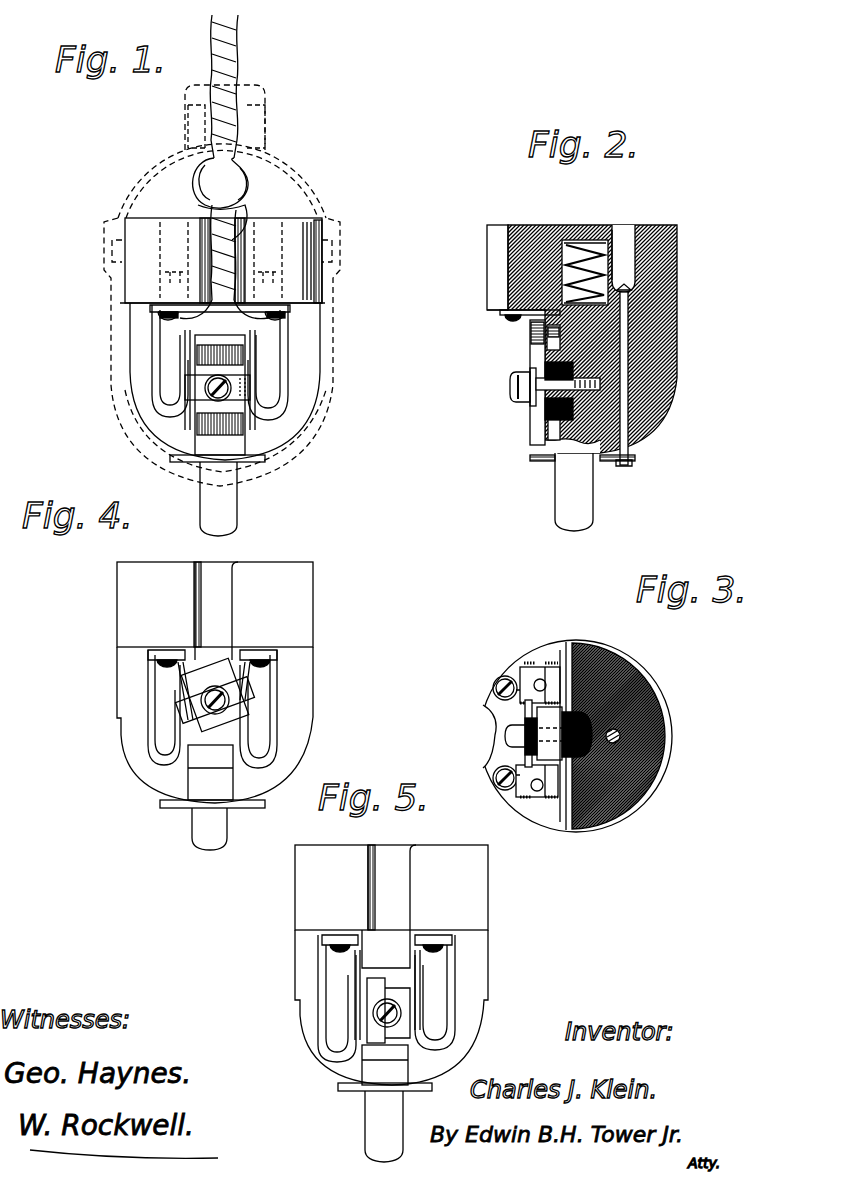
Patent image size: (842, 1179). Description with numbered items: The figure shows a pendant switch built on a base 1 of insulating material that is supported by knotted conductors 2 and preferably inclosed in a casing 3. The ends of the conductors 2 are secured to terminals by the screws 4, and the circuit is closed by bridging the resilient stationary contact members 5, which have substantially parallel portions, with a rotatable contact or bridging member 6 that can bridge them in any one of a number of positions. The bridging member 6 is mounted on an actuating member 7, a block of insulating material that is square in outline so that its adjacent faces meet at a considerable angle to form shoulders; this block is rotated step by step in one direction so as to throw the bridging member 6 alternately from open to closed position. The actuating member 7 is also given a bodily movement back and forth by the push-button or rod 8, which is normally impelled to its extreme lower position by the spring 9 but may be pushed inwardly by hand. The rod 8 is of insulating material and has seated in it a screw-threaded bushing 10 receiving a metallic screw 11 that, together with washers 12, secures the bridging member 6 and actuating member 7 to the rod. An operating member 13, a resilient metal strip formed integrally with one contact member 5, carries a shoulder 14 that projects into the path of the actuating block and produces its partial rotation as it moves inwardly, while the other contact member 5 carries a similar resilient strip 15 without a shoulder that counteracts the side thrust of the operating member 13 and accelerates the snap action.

In FIG. 1, the base 1 is at (322, 220).
In FIG. 2, the base 1 is at (677, 285).
In FIG. 4, the base 1 is at (305, 590).
In FIG. 3, the base 1 is at (590, 830).
In FIG. 5, the base 1 is at (295, 908).
In FIG. 1, the knotted conductors 2 is at (235, 135).
In FIG. 1, the casing 3 is at (320, 416).
In FIG. 2, the casing 3 is at (753, 372).
In FIG. 1, the screws 4 is at (168, 318).
In FIG. 2, the screws 4 is at (508, 318).
In FIG. 4, the screws 4 is at (165, 657).
In FIG. 3, the screws 4 is at (492, 688).
In FIG. 5, the screws 4 is at (335, 948).
In FIG. 1, the resilient contact members 5 is at (178, 368).
In FIG. 2, the resilient contact members 5 is at (548, 415).
In FIG. 4, the resilient contact members 5 is at (160, 722).
In FIG. 3, the resilient contact members 5 is at (535, 668).
In FIG. 5, the resilient contact members 5 is at (350, 1000).
In FIG. 1, the rotatable contact member 6 is at (202, 408).
In FIG. 2, the rotatable contact member 6 is at (535, 392).
In FIG. 4, the rotatable contact member 6 is at (178, 704).
In FIG. 3, the rotatable contact member 6 is at (528, 706).
In FIG. 5, the rotatable contact member 6 is at (400, 1045).
In FIG. 1, the actuating member 7 is at (235, 408).
In FIG. 2, the actuating member 7 is at (560, 400).
In FIG. 4, the actuating member 7 is at (240, 725).
In FIG. 3, the actuating member 7 is at (545, 755).
In FIG. 5, the actuating member 7 is at (410, 995).
In FIG. 1, the push-button or rod 8 is at (228, 500).
In FIG. 2, the push-button or rod 8 is at (560, 498).
In FIG. 4, the push-button or rod 8 is at (198, 788).
In FIG. 3, the push-button or rod 8 is at (566, 830).
In FIG. 5, the push-button or rod 8 is at (368, 1125).
In FIG. 2, the spring 9 is at (577, 243).
In FIG. 2, the screw-threaded bushing 10 is at (630, 352).
In FIG. 3, the screw-threaded bushing 10 is at (614, 745).
In FIG. 1, the metallic screw 11 is at (205, 388).
In FIG. 2, the metallic screw 11 is at (540, 372).
In FIG. 4, the metallic screw 11 is at (205, 730).
In FIG. 3, the metallic screw 11 is at (505, 732).
In FIG. 5, the metallic screw 11 is at (378, 1012).
In FIG. 2, the washers 12 is at (630, 340).
In FIG. 3, the washers 12 is at (572, 645).
In FIG. 1, the operating member 13 is at (255, 330).
In FIG. 2, the operating member 13 is at (553, 337).
In FIG. 4, the operating member 13 is at (255, 655).
In FIG. 3, the operating member 13 is at (548, 665).
In FIG. 5, the operating member 13 is at (445, 960).
In FIG. 1, the shoulder 14 is at (250, 352).
In FIG. 4, the shoulder 14 is at (262, 665).
In FIG. 5, the shoulder 14 is at (420, 970).
In FIG. 1, the resilient strip 15 is at (182, 338).
In FIG. 2, the resilient strip 15 is at (540, 430).
In FIG. 4, the resilient strip 15 is at (172, 672).
In FIG. 3, the resilient strip 15 is at (540, 800).
In FIG. 5, the resilient strip 15 is at (355, 965).